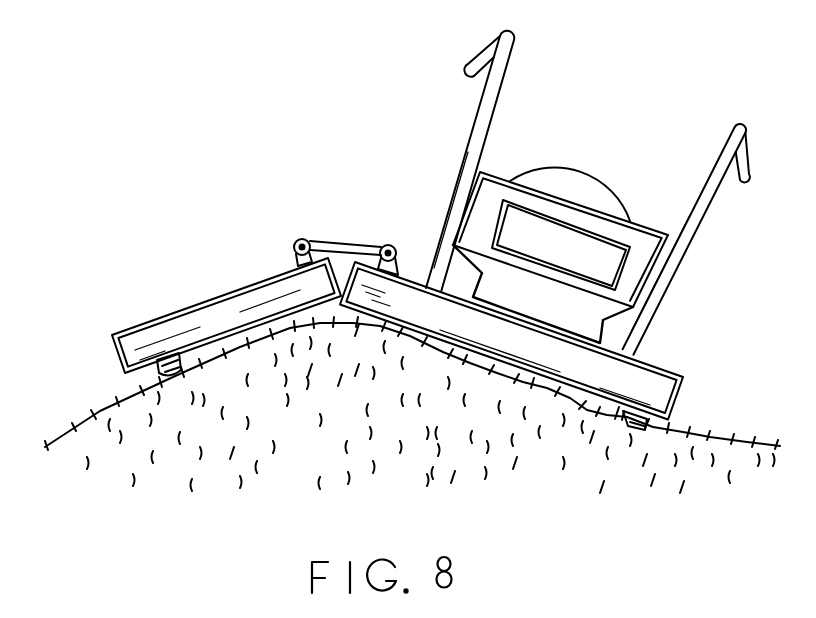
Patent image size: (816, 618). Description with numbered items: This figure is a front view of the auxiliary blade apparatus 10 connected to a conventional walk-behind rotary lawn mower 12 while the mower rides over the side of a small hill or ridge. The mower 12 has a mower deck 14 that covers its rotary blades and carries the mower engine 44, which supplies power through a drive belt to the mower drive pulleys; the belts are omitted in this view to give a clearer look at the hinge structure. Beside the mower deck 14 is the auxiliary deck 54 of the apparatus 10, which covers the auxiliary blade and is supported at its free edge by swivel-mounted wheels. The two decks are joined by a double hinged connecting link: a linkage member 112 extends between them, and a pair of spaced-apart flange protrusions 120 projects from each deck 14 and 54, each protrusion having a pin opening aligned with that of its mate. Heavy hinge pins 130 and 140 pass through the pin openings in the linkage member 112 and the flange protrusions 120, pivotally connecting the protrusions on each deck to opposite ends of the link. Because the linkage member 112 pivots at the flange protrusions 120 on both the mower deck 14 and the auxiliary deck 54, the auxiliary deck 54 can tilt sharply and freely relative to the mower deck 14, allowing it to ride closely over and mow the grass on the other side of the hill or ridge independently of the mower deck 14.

The auxiliary blade apparatus 10 is at (164, 131).
The rotary lawn mower 12 is at (644, 96).
The mower deck 14 is at (605, 373).
The mower engine 44 is at (400, 328).
The auxiliary deck 54 is at (190, 322).
The linkage member 112 is at (344, 242).
The flange protrusion 120 is at (294, 249).
The hinge pin 130 is at (309, 241).
The hinge pin 140 is at (395, 246).